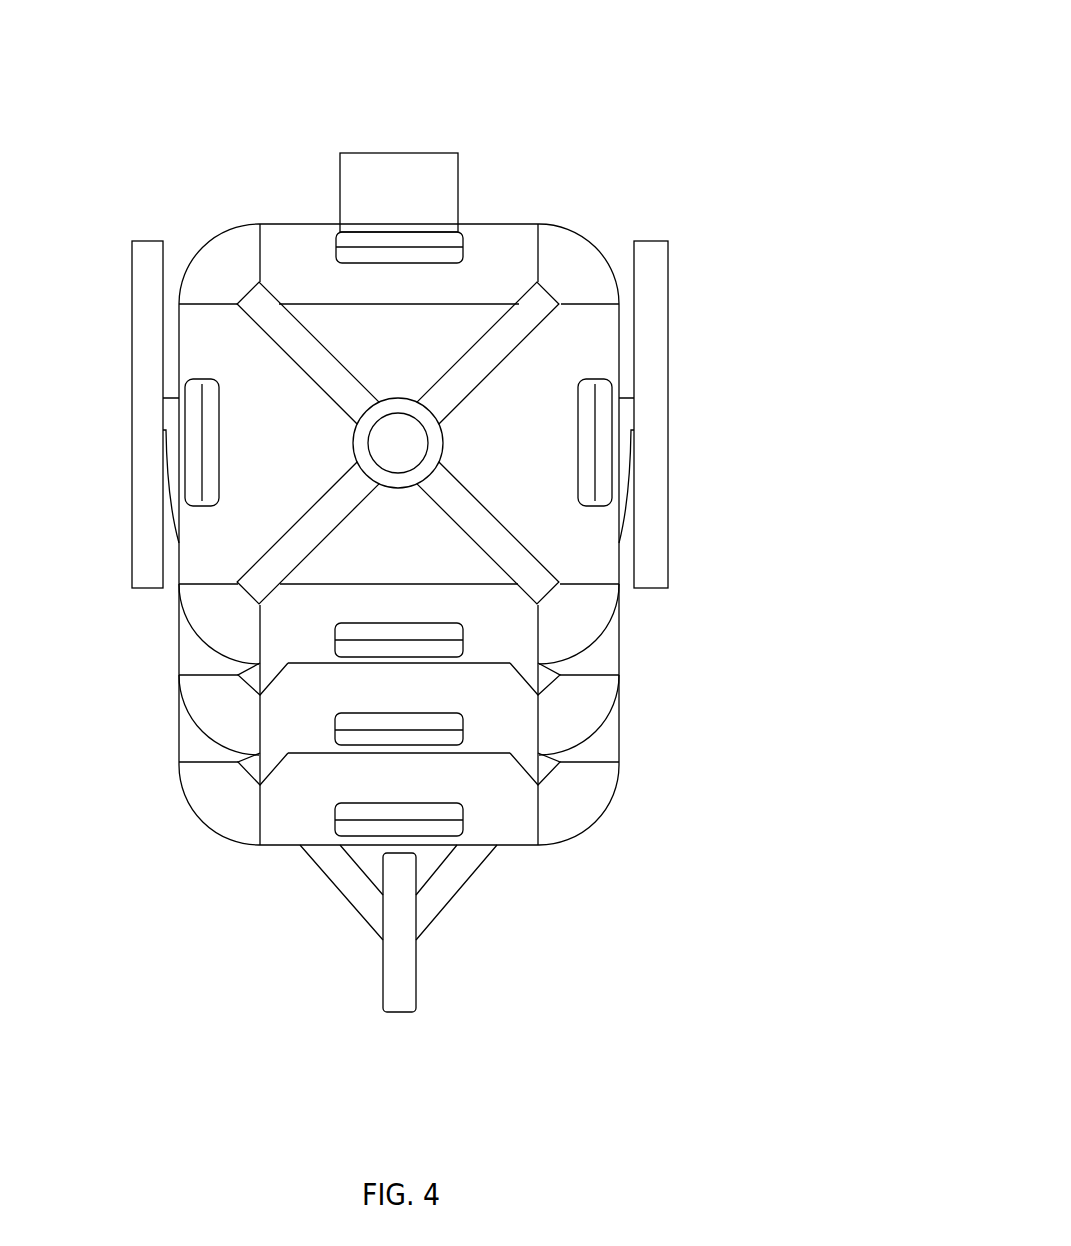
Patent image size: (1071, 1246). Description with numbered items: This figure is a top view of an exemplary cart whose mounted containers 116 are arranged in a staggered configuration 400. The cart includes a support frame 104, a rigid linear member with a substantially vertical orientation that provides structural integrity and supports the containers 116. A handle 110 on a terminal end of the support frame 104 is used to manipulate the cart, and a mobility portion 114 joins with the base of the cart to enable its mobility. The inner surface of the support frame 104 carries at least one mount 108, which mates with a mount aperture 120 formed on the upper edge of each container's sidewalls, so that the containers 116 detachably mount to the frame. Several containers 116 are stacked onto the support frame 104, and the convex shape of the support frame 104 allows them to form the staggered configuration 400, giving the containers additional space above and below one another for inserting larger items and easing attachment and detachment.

The staggered configuration 400 is at (693, 99).
The support frame 104 is at (398, 450).
The mount 108 is at (415, 192).
The handle 110 is at (288, 312).
The mobility portion 114 is at (132, 262).
The container 116 is at (228, 243).
The mount aperture 120 is at (435, 253).